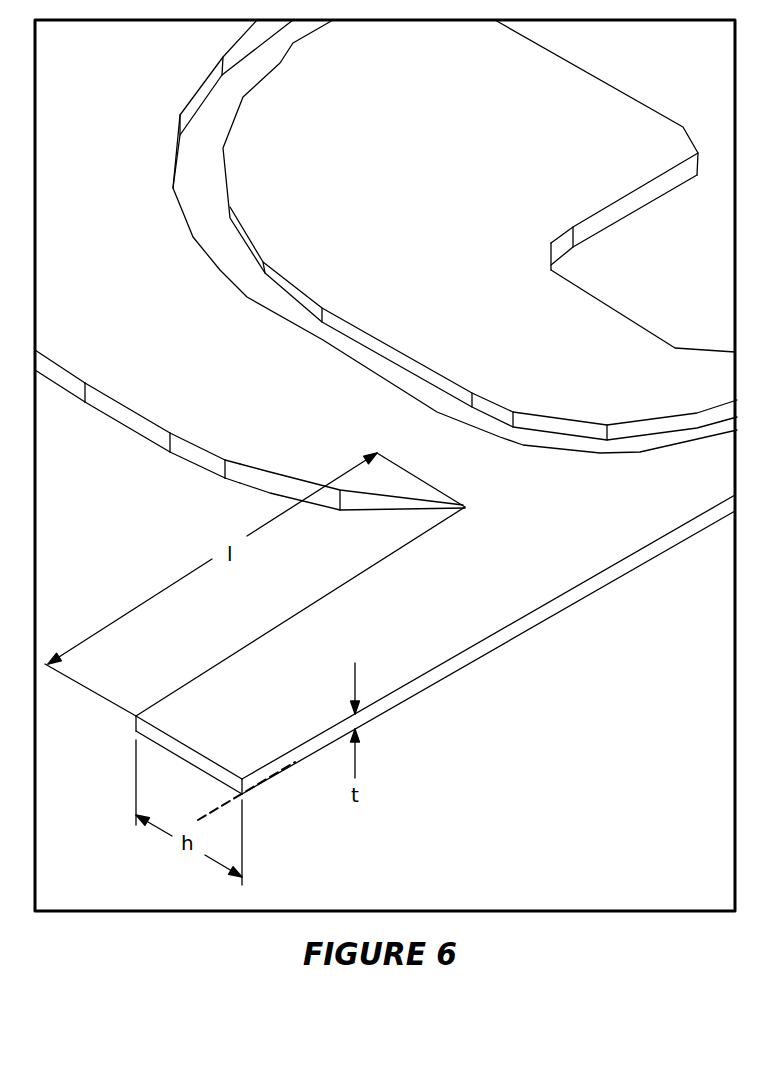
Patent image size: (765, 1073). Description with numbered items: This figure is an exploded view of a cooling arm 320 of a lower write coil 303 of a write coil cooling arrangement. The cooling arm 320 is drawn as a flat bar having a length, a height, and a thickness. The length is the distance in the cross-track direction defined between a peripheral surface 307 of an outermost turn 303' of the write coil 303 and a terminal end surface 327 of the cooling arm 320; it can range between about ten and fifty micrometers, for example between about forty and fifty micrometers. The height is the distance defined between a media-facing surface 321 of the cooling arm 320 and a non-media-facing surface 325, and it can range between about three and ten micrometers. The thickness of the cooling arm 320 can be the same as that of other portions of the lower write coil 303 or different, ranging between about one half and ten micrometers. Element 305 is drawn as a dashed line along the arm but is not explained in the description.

The outermost turn 303' is at (119, 440).
The lower write coil 303 is at (185, 476).
The peripheral surface 307 is at (263, 477).
The cooling arm 320 is at (401, 675).
The media-facing surface 321 is at (402, 695).
The non-media-facing surface 325 is at (200, 676).
The terminal end surface 327 is at (145, 730).
The bottom edge line 305 is at (215, 815).